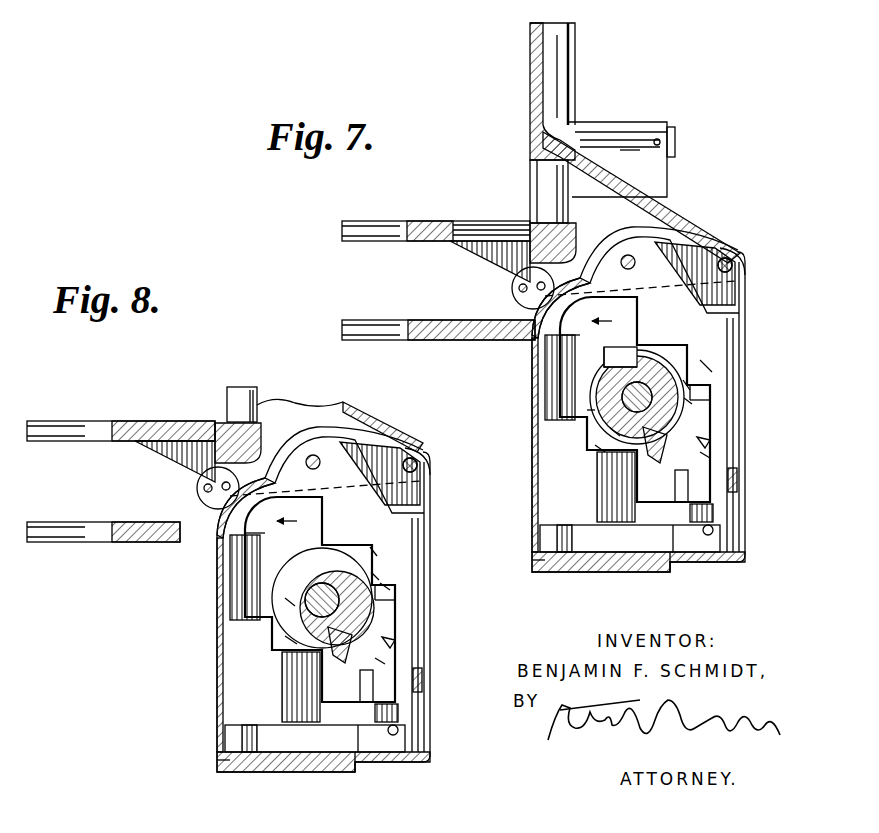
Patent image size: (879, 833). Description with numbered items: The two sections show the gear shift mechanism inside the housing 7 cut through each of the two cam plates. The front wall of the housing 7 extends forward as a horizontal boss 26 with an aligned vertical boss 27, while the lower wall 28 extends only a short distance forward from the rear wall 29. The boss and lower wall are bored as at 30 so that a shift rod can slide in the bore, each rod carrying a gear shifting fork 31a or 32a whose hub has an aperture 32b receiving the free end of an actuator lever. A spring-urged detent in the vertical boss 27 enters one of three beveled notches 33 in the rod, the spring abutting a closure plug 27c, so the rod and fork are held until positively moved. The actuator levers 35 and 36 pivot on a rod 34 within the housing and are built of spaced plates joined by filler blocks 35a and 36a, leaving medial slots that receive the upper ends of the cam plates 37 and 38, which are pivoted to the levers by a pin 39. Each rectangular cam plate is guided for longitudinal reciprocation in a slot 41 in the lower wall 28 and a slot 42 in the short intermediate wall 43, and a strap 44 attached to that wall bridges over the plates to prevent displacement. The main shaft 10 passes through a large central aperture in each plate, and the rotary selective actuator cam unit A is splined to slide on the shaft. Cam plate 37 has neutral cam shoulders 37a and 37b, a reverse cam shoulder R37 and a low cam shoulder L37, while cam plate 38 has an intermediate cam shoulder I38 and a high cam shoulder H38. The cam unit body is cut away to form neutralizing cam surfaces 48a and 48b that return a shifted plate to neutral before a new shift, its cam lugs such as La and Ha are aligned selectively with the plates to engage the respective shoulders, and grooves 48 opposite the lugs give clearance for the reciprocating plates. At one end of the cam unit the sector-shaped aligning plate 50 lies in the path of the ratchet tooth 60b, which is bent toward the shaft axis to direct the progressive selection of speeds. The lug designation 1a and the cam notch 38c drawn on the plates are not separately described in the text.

In FIG. 7, the rib 1a is at (575, 347).
In FIG. 8, the rib 1a is at (225, 533).
In FIG. 7, the rotary selective actuator cam unit A is at (598, 358).
In FIG. 8, the rotary selective actuator cam unit A is at (234, 555).
In FIG. 7, the housing 7 is at (703, 257).
In FIG. 8, the housing 7 is at (359, 462).
In FIG. 7, the main shaft 10 is at (622, 397).
In FIG. 8, the main shaft 10 is at (259, 602).
In FIG. 7, the horizontal boss 26 is at (575, 72).
In FIG. 7, the vertical boss 27 is at (637, 122).
In FIG. 7, the closure plug 27c is at (672, 142).
In FIG. 7, the lower wall 28 is at (533, 514).
In FIG. 8, the lower wall 28 is at (304, 599).
In FIG. 7, the rear wall 29 is at (615, 573).
In FIG. 8, the rear wall 29 is at (315, 761).
In FIG. 7, the bore 30 is at (543, 173).
In FIG. 8, the bore 30 is at (261, 394).
In FIG. 7, the gear shifting fork 31a is at (473, 341).
In FIG. 8, the gear shifting fork 31a is at (103, 516).
In FIG. 7, the gear shifting fork 32a is at (468, 228).
In FIG. 8, the gear shifting fork 32a is at (121, 436).
In FIG. 7, the aperture 32b is at (553, 243).
In FIG. 8, the aperture 32b is at (297, 426).
In FIG. 7, the beveled notch 33 is at (593, 195).
In FIG. 7, the rod 34 is at (745, 258).
In FIG. 8, the rod 34 is at (434, 461).
In FIG. 7, the actuator lever 35 is at (727, 260).
In FIG. 7, the filler block 35a is at (512, 290).
In FIG. 8, the actuator lever 36 is at (406, 436).
In FIG. 8, the filler block 36a is at (200, 495).
In FIG. 7, the cam plate 37 is at (700, 352).
In FIG. 7, the neutral cam shoulder 37a is at (705, 368).
In FIG. 7, the neutral cam shoulder 37b is at (600, 450).
In FIG. 8, the cam plate 38 is at (273, 603).
In FIG. 8, the cam notch 38c is at (425, 543).
In FIG. 7, the pin 39 is at (632, 258).
In FIG. 8, the pin 39 is at (354, 423).
In FIG. 7, the slot 41 is at (545, 565).
In FIG. 8, the slot 41 is at (209, 763).
In FIG. 7, the slot 42 is at (676, 556).
In FIG. 8, the slot 42 is at (384, 759).
In FIG. 7, the intermediate wall 43 is at (672, 545).
In FIG. 8, the intermediate wall 43 is at (343, 768).
In FIG. 7, the strap 44 is at (738, 480).
In FIG. 8, the strap 44 is at (443, 680).
In FIG. 7, the groove 48 is at (690, 340).
In FIG. 8, the groove 48 is at (276, 598).
In FIG. 7, the neutralizing cam surface 48a is at (690, 385).
In FIG. 8, the neutralizing cam surface 48a is at (426, 563).
In FIG. 7, the neutralizing cam surface 48b is at (617, 433).
In FIG. 8, the neutralizing cam surface 48b is at (232, 660).
In FIG. 7, the sector-shaped aligning plate 50 is at (700, 415).
In FIG. 8, the sector-shaped aligning plate 50 is at (425, 614).
In FIG. 7, the ratchet tooth 60b is at (700, 440).
In FIG. 8, the ratchet tooth 60b is at (417, 639).
In FIG. 7, the low cam shoulder L37 is at (690, 400).
In FIG. 7, the cam lug La is at (705, 450).
In FIG. 7, the reverse cam shoulder R37 is at (590, 410).
In FIG. 8, the intermediate cam shoulder I38 is at (230, 625).
In FIG. 8, the high cam shoulder H38 is at (431, 579).
In FIG. 8, the cam lug Ha is at (425, 651).